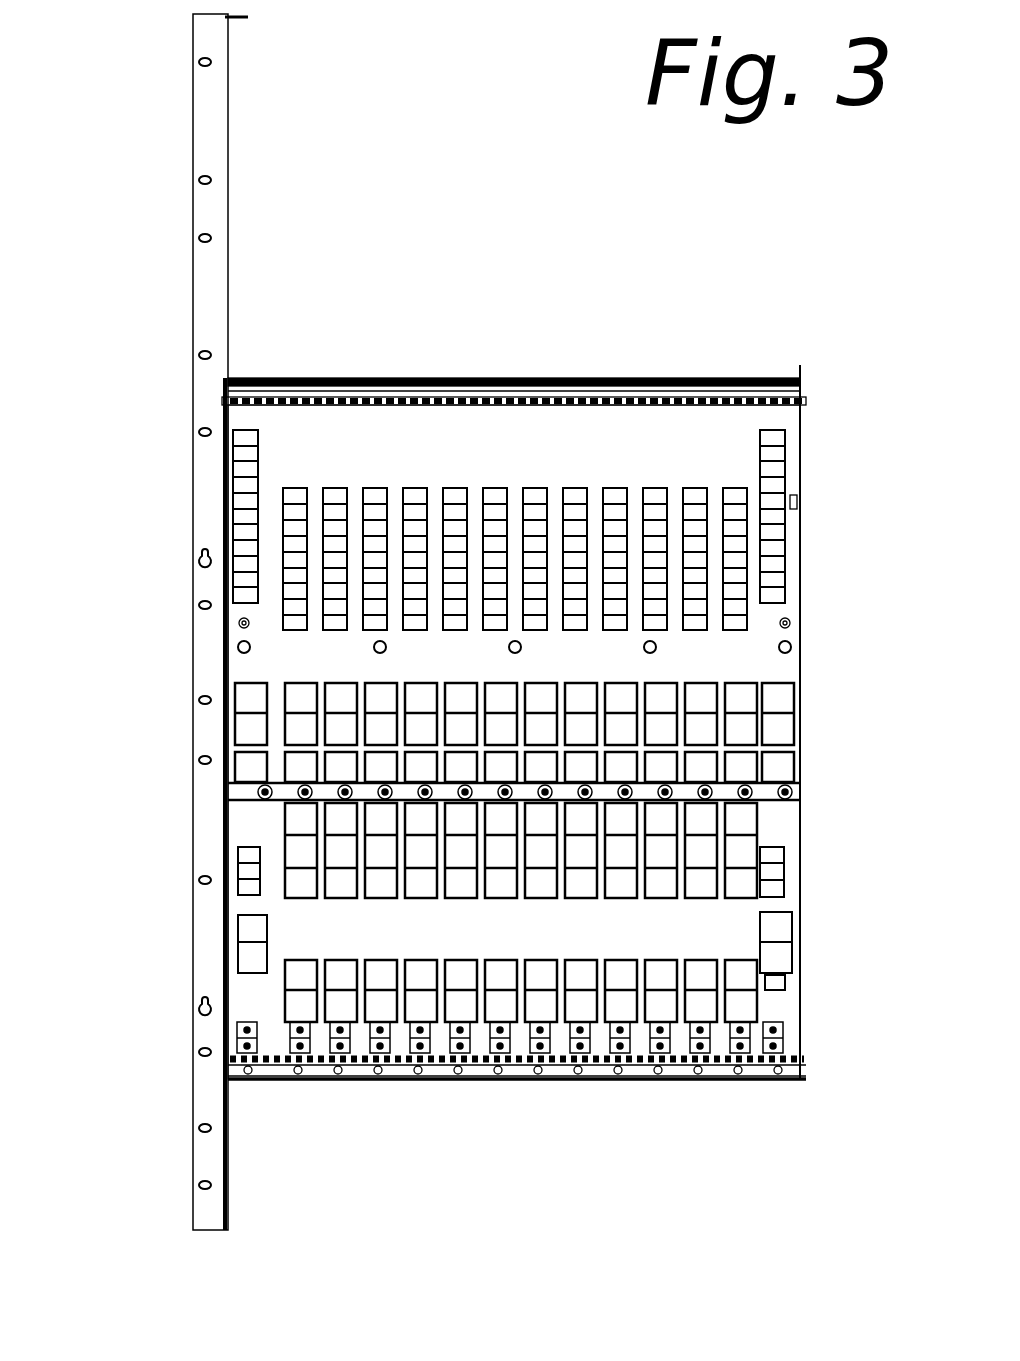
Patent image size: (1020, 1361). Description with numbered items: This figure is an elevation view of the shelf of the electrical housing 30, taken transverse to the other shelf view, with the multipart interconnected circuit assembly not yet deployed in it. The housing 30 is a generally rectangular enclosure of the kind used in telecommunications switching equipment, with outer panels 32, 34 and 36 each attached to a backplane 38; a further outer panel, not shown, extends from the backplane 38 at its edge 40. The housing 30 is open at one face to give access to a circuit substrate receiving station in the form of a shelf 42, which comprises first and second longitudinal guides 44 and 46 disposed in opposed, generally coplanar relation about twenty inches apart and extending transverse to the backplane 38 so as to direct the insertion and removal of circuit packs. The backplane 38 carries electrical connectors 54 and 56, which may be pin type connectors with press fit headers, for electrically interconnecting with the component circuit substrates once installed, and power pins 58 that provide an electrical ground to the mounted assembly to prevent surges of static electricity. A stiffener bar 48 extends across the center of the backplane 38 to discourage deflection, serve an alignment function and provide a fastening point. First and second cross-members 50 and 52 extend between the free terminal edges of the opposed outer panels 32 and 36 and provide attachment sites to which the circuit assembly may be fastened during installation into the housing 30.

The electrical housing 30 is at (521, 332).
The outer panel 32 is at (680, 381).
The outer panel 34 is at (230, 812).
The outer panel 36 is at (477, 1078).
The backplane 38 is at (758, 652).
The edge 40 is at (803, 668).
The shelf 42 is at (570, 495).
The first longitudinal guide 44 is at (386, 396).
The second longitudinal guide 46 is at (392, 1075).
The stiffener bar 48 is at (800, 793).
The first cross-member 50 is at (647, 1074).
The second cross-member 52 is at (750, 388).
The electrical connector 54 is at (296, 572).
The electrical connector 56 is at (296, 887).
The power pins 58 is at (296, 1047).